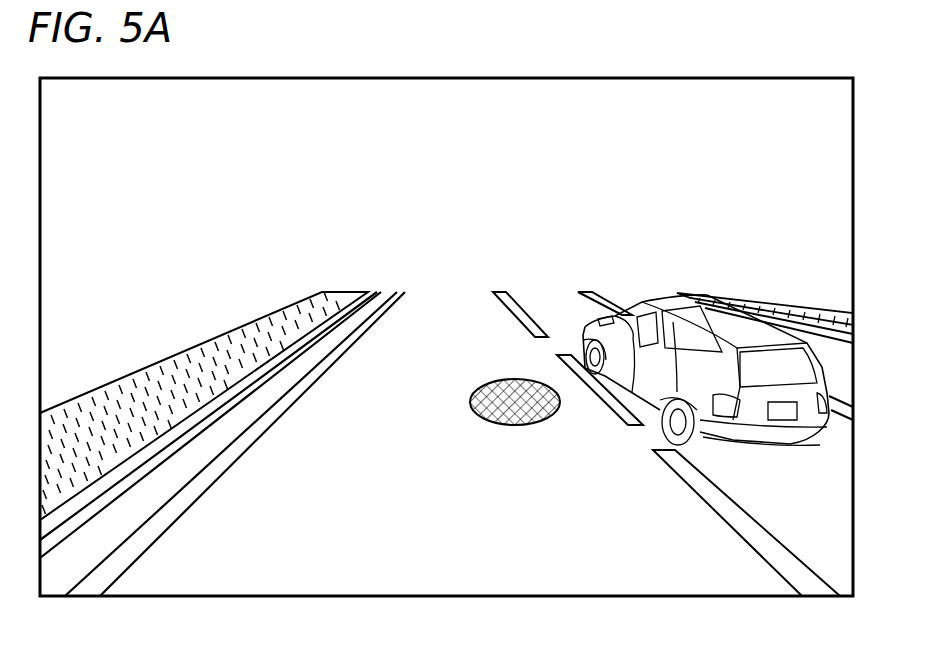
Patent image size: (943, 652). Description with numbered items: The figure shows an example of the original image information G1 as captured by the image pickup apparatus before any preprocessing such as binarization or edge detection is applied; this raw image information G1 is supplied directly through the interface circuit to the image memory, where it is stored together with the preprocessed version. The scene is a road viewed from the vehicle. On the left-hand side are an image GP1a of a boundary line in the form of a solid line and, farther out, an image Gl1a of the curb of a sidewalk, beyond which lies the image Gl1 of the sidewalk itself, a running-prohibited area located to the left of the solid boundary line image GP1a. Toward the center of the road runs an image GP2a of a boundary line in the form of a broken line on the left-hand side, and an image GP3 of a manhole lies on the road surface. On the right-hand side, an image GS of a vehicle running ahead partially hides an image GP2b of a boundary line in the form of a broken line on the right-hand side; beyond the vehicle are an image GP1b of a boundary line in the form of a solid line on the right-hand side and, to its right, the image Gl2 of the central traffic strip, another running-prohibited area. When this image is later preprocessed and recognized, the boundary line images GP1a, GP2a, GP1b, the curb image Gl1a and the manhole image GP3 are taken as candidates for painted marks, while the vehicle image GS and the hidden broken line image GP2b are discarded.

The image information G1 is at (711, 78).
The image of sidewalk Gl1 is at (222, 345).
The image of curb of sidewalk Gl1a is at (313, 343).
The image of boundary line in the form of a solid line on the left-hand side GP1a is at (280, 410).
The image of boundary line in the form of a broken line on the left-hand side GP2a is at (683, 470).
The image of manhole GP3 is at (519, 424).
The image of central traffic strip Gl2 is at (765, 300).
The image of boundary line in the form of a solid line on the right-hand side GP1b is at (810, 320).
The image of boundary line in the form of a broken line on the right-hand side GP2b is at (840, 408).
The image of vehicle running ahead GS is at (682, 302).